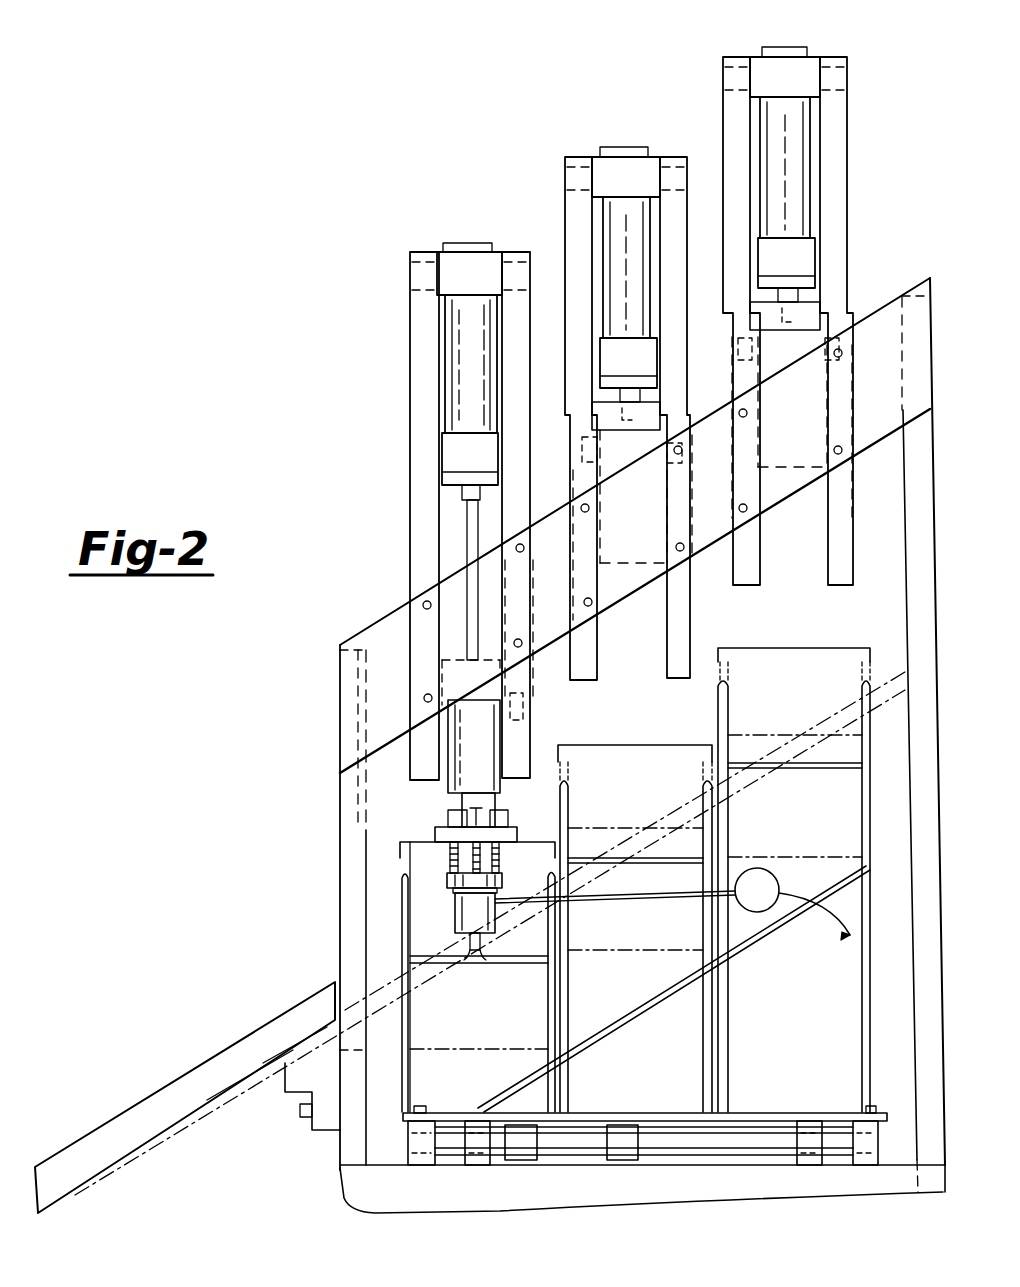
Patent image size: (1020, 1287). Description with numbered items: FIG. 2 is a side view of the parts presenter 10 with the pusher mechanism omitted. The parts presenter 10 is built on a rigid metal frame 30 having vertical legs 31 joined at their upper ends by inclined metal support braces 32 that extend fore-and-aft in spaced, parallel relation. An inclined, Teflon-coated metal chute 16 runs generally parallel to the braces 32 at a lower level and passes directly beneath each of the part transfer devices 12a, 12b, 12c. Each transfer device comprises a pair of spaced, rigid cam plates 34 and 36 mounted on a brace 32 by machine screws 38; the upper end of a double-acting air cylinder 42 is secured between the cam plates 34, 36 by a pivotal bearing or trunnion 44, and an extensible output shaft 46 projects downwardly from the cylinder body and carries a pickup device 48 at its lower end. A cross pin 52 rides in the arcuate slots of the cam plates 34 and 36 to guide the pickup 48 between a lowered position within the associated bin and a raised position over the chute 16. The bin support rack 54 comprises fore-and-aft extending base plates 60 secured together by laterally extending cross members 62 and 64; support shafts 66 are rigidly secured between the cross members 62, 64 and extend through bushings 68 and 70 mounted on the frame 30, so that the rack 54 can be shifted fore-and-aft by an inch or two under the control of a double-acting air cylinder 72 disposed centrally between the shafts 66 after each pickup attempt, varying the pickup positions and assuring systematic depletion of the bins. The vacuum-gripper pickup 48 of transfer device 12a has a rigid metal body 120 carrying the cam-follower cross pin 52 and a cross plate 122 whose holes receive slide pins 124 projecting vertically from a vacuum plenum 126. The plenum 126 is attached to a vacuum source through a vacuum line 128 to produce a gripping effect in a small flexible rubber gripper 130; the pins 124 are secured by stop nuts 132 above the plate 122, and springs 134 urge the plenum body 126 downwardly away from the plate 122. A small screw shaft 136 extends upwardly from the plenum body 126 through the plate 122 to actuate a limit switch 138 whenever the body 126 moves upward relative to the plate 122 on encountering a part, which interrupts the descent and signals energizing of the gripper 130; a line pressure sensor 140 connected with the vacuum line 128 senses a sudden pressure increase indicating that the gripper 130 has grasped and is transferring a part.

The parts presenter 10 is at (333, 560).
The part transfer device 12a is at (417, 427).
The part transfer device 12b is at (655, 103).
The part transfer device 12c is at (815, 18).
The chute 16 is at (215, 1052).
The frame 30 is at (340, 1143).
The vertical legs 31 is at (915, 531).
The inclined support braces 32 is at (378, 620).
The cam plate 34 is at (410, 382).
The cam plate 36 is at (530, 300).
The machine screws 38 is at (427, 610).
The double-acting air cylinder 42 is at (470, 345).
The pivotal bearing or trunnion 44 is at (410, 272).
The extensible output shaft 46 is at (467, 532).
The pickup device 48 is at (448, 790).
The cross pin 52 is at (523, 706).
The bin support rack 54 is at (403, 957).
The base plates 60 is at (455, 1112).
The cross member 62 is at (415, 1170).
The cross member 64 is at (860, 1158).
The support shafts 66 is at (565, 1148).
The bushing 68 is at (478, 1160).
The bushing 70 is at (795, 1160).
The double-acting air cylinder 72 is at (593, 1158).
The pickup body 120 is at (540, 748).
The cross plate 122 is at (440, 835).
The slide pins 124 is at (450, 866).
The vacuum plenum 126 is at (455, 907).
The vacuum line 128 is at (605, 897).
The rubber gripper 130 is at (476, 960).
The stop nuts 132 is at (448, 815).
The springs 134 is at (450, 858).
The screw shaft 136 is at (555, 840).
The limit switch 138 is at (470, 808).
The line pressure sensor 140 is at (815, 840).